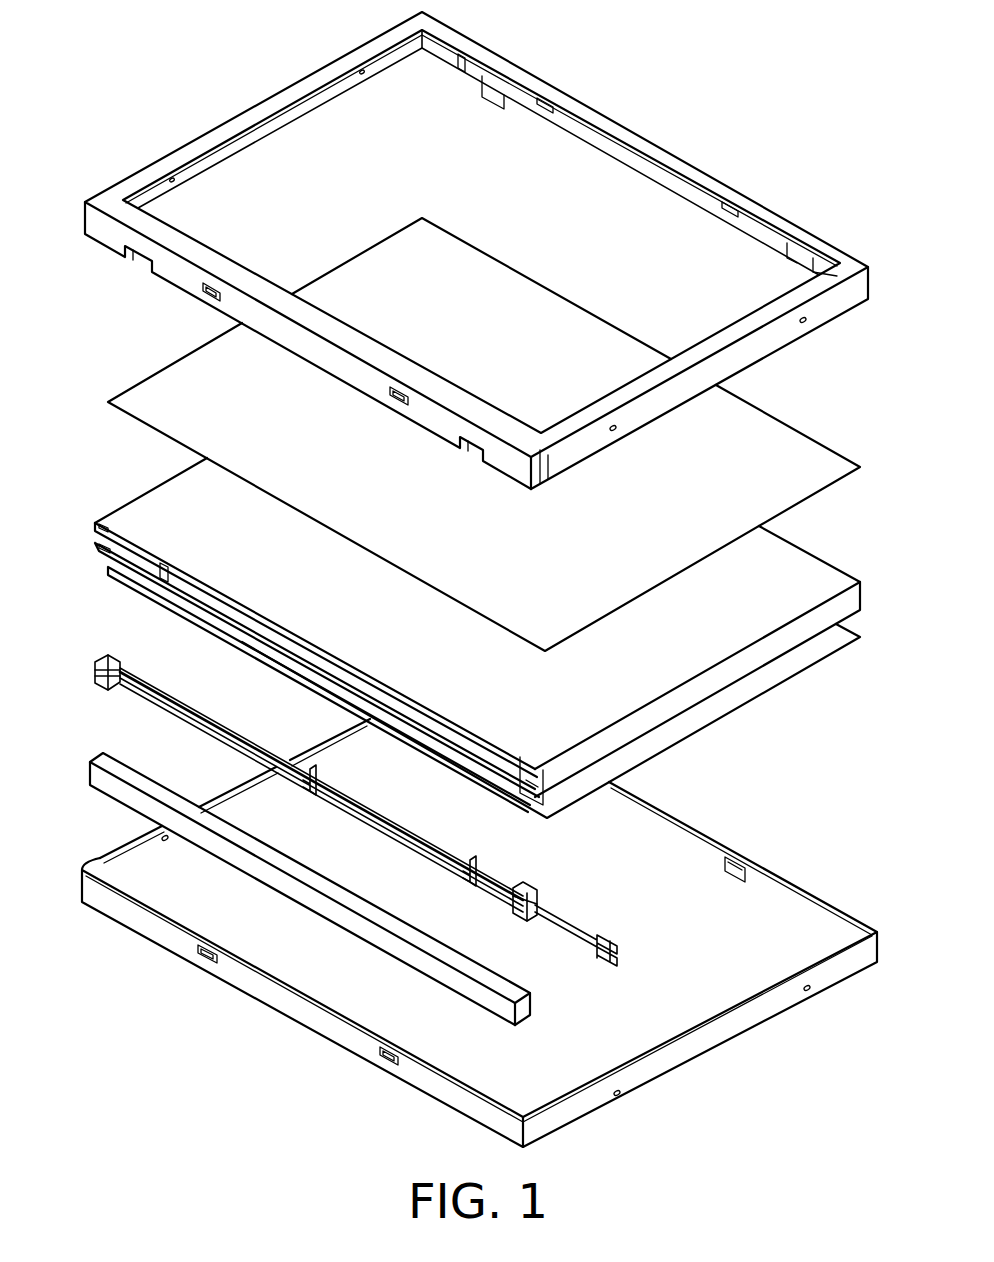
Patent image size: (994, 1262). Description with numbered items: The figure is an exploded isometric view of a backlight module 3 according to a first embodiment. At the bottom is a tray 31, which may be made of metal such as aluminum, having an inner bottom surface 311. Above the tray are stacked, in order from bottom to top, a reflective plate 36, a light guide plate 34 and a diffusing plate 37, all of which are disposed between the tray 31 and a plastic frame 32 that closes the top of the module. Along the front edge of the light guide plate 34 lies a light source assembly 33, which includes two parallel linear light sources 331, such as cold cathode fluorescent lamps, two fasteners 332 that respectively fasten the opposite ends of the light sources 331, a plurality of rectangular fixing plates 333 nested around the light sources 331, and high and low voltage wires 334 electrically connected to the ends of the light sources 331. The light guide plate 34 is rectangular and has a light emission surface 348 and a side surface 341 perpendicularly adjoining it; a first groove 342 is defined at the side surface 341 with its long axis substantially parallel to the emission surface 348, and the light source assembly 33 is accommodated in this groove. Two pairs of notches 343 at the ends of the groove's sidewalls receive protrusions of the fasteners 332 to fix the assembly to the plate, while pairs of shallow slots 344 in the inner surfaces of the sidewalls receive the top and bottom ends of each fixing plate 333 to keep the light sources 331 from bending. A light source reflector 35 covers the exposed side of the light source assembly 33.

The backlight module 3 is at (149, 69).
The tray 31 is at (479, 953).
The inner bottom surface 311 is at (717, 977).
The plastic frame 32 is at (593, 117).
The light source assembly 33 is at (326, 785).
The linear light sources 331 is at (130, 675).
The fasteners 332 is at (102, 656).
The fixing plates 333 is at (157, 702).
The high and low voltage wires 334 is at (183, 724).
The light guide plate 34 is at (472, 635).
The side surface 341 is at (133, 577).
The first groove 342 is at (127, 552).
The notches 343 is at (107, 518).
The shallow slots 344 is at (166, 570).
The light emission surface 348 is at (773, 543).
The light source reflector 35 is at (127, 790).
The reflective plate 36 is at (803, 652).
The diffusing plate 37 is at (803, 453).